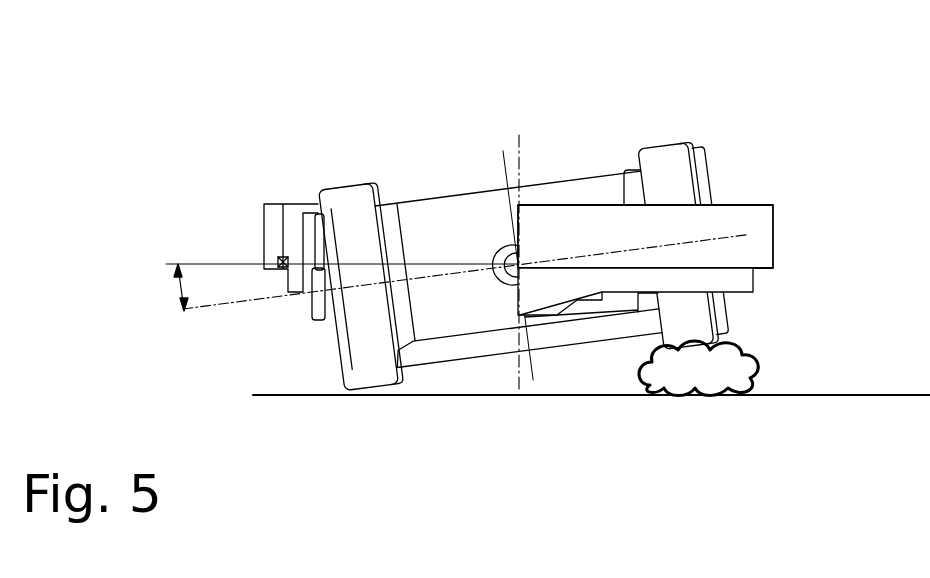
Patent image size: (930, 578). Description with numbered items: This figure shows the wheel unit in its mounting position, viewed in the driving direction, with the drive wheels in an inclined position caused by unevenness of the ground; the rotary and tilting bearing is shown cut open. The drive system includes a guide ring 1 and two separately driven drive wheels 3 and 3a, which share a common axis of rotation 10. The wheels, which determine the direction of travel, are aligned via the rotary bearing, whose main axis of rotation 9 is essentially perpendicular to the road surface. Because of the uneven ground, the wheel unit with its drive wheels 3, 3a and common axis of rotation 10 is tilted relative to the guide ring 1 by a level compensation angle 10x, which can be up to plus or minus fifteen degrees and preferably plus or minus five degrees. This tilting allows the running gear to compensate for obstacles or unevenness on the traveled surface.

The guide ring 1 is at (753, 213).
The drive wheel 3 is at (687, 143).
The drive wheel 3a is at (358, 195).
The main axis of rotation 9 is at (523, 146).
The common axis of rotation 10 is at (433, 278).
The level compensation angle 10x is at (178, 290).